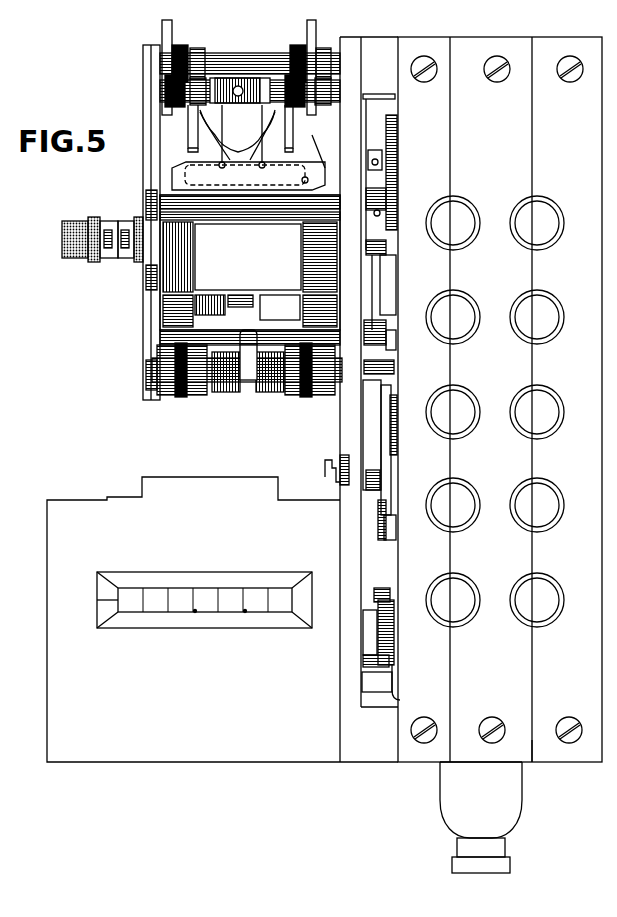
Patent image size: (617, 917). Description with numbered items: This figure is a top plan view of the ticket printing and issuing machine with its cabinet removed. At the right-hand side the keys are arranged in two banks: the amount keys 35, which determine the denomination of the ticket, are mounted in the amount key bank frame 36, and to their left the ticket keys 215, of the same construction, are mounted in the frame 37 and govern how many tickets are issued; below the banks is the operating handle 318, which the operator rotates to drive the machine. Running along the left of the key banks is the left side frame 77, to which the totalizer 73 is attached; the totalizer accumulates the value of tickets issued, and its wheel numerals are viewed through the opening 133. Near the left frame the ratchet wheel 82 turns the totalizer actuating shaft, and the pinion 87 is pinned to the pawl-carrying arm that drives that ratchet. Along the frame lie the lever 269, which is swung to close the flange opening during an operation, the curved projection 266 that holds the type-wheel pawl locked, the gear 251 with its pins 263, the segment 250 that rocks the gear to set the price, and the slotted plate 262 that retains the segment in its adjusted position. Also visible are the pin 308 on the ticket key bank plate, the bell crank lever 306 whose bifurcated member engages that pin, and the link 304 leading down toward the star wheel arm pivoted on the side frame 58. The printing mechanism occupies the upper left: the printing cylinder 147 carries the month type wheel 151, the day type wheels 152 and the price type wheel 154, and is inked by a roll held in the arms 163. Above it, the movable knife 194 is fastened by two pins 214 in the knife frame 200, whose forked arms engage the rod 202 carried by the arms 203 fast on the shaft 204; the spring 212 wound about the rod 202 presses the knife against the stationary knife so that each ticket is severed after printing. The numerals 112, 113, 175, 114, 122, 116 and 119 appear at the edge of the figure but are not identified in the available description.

The side frame 58 is at (604, 40).
The amount keys 35 is at (548, 240).
The ticket keys 215 is at (465, 618).
The operating handle 318 is at (468, 802).
The ticket key bank frame 37 is at (512, 752).
The amount key bank frame 36 is at (580, 752).
The left side frame 77 is at (340, 441).
The totalizer 73 is at (192, 622).
The opening 133 is at (138, 622).
The lever 269 is at (365, 107).
The curved projection 266 is at (380, 218).
The gear 251 is at (392, 271).
The pins 263 is at (394, 290).
The segment 250 is at (385, 348).
The plate 262 is at (390, 358).
The pin 308 is at (392, 377).
The bell crank lever 306 is at (390, 448).
The link 304 is at (392, 540).
The ratchet wheel 82 is at (385, 596).
The pinion 87 is at (368, 650).
The type wheels 152 is at (148, 307).
The arms 203 is at (162, 30).
The shaft 204 is at (222, 62).
The rod 202 is at (278, 80).
The pins 214 is at (288, 148).
The spring 212 is at (222, 112).
The movable knife 194 is at (328, 170).
The knife frame 200 is at (195, 148).
The printing cylinder 147 is at (242, 225).
The type wheel 154 is at (312, 308).
The arms 163 is at (190, 398).
The type wheel 151 is at (222, 392).
The shaft 112 is at (7, 377).
The shaft 113 is at (6, 392).
The lever 175 is at (11, 413).
The shaft 114 is at (7, 437).
The shaft 122 is at (9, 455).
The shaft 116 is at (8, 475).
The shaft 119 is at (6, 505).